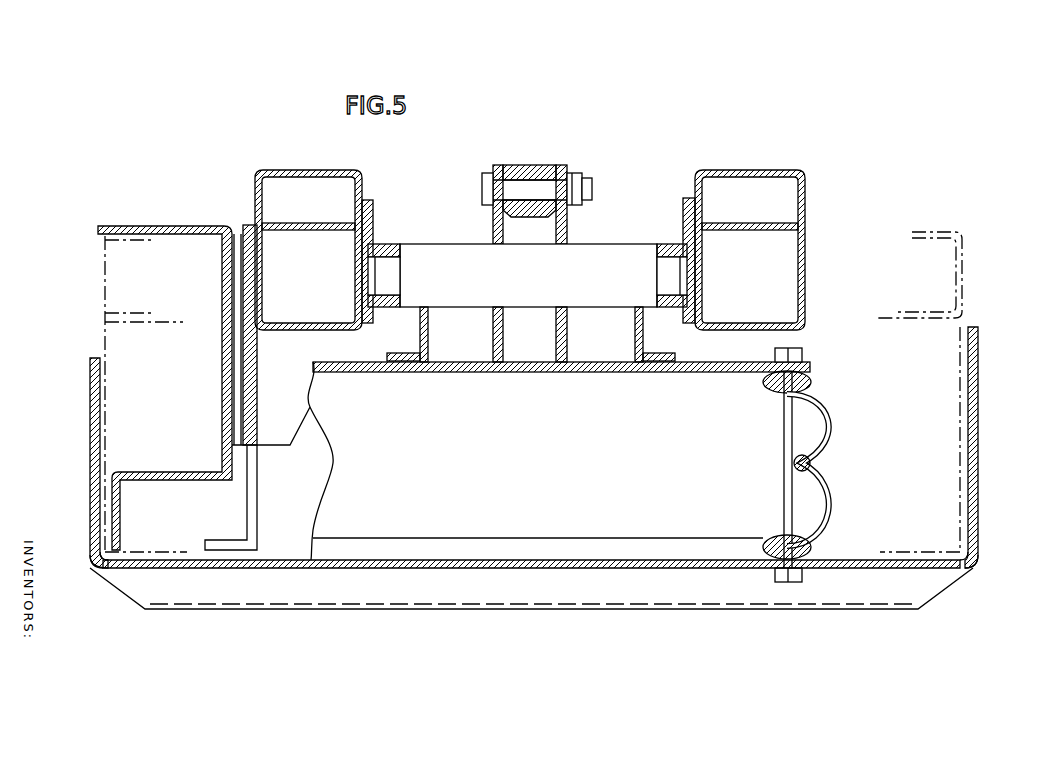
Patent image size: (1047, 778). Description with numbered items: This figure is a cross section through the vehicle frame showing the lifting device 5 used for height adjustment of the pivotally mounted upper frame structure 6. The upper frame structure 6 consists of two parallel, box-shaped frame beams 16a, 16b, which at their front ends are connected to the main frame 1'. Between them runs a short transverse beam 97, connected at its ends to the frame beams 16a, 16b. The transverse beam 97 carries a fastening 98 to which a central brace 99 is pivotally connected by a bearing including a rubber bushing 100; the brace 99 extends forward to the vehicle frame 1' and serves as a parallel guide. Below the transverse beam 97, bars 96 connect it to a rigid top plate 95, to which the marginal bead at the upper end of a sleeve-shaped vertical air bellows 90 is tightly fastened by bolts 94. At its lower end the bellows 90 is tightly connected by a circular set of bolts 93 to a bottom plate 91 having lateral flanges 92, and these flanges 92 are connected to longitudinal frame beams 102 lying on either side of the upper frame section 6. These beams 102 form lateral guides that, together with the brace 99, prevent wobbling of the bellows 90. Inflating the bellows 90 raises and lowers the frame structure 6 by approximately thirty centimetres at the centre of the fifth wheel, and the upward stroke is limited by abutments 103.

The main frame 1' is at (137, 367).
The longitudinal frame beams 102 is at (205, 226).
The frame beam 16b is at (338, 145).
The frame beam 16a is at (771, 145).
The upper frame structure 6 is at (810, 190).
The fastening 98 is at (493, 222).
The central brace 99 is at (545, 165).
The rubber bushing 100 is at (580, 178).
The short transverse beam 97 is at (632, 255).
The bars 96 is at (470, 335).
The top plate 95 is at (560, 372).
The lifting device 5 is at (812, 372).
The bolts 94 is at (770, 385).
The air bellows 90 is at (832, 410).
The bolts 93 is at (770, 542).
The abutments 103 is at (255, 470).
The lateral flanges 92 is at (95, 447).
The bottom plate 91 is at (220, 568).